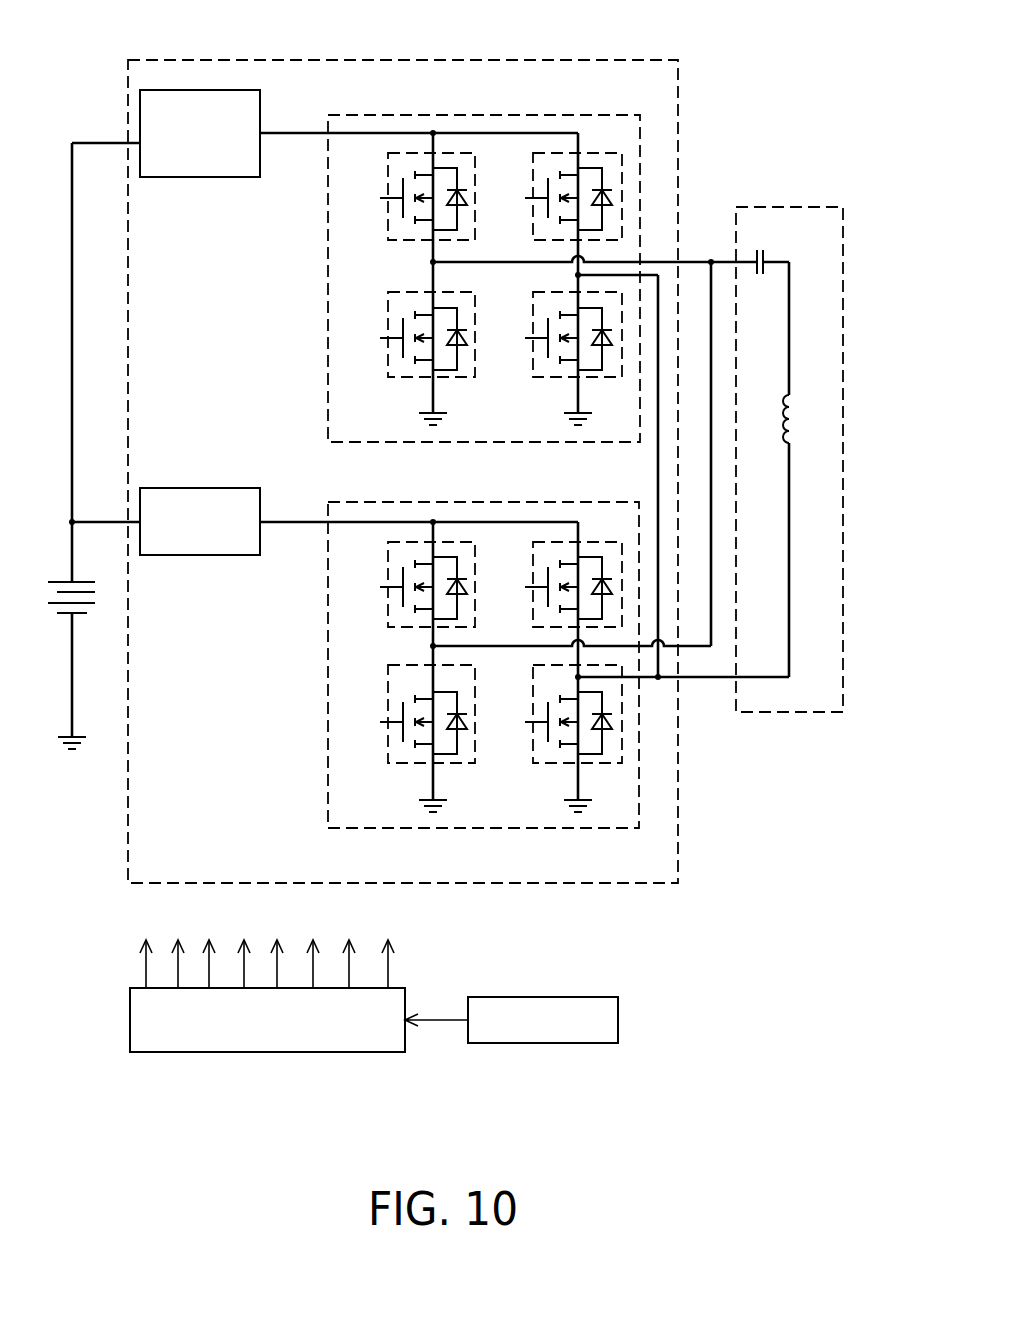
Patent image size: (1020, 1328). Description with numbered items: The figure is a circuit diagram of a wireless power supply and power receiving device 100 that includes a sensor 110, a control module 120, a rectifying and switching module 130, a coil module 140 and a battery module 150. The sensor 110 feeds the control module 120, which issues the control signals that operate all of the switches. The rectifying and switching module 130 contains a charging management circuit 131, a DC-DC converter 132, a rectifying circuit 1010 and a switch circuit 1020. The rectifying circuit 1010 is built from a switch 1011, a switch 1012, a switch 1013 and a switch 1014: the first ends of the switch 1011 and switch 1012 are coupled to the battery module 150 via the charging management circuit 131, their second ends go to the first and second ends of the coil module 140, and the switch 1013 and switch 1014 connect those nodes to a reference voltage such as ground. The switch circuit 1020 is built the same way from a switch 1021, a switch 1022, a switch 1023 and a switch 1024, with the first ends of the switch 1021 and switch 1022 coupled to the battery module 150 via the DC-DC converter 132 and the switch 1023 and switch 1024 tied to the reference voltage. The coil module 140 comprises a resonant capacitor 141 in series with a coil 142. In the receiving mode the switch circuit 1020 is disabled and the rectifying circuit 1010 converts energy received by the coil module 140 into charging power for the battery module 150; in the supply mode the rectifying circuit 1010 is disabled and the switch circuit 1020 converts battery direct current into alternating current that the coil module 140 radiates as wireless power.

The wireless power supply and power receiving device 100 is at (505, 1085).
The sensor 110 is at (618, 1020).
The control module 120 is at (230, 1052).
The rectifying and switching module 130 is at (433, 60).
The charging management circuit 131 is at (185, 177).
The DC-DC converter 132 is at (185, 555).
The coil module 140 is at (782, 207).
The resonant capacitor 141 is at (760, 275).
The coil 142 is at (797, 407).
The battery module 150 is at (95, 593).
The rectifying circuit 1010 is at (325, 308).
The switch 1011 is at (388, 158).
The switch 1012 is at (597, 152).
The switch 1013 is at (408, 380).
The switch 1014 is at (555, 380).
The switch circuit 1020 is at (325, 695).
The switch 1021 is at (384, 544).
The switch 1022 is at (597, 540).
The switch 1023 is at (408, 767).
The switch 1024 is at (555, 767).